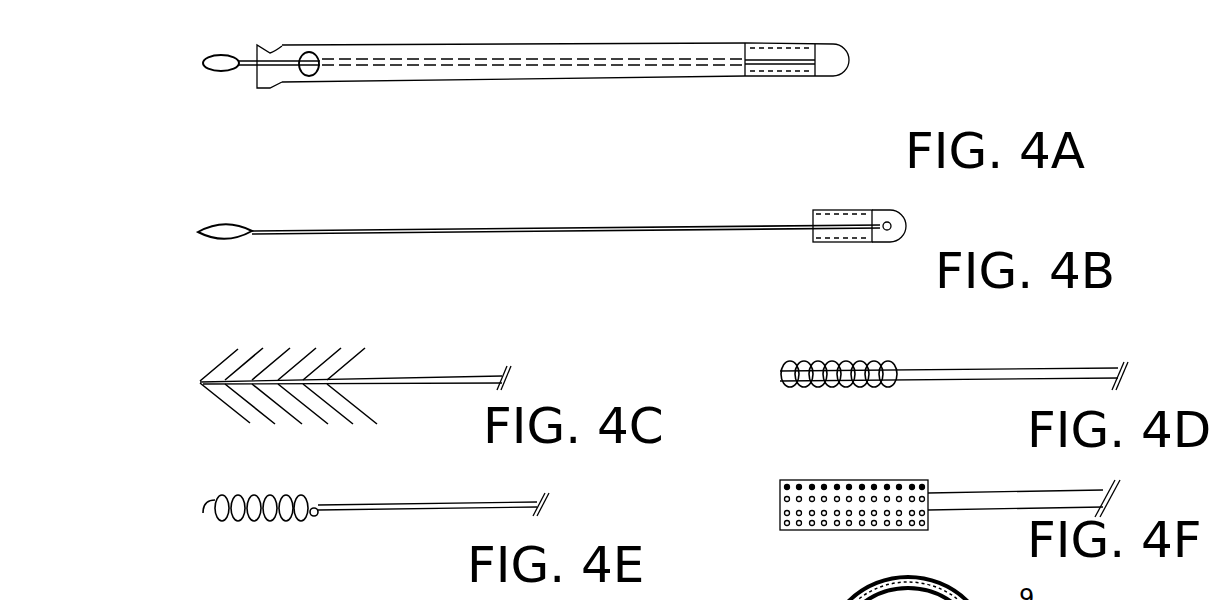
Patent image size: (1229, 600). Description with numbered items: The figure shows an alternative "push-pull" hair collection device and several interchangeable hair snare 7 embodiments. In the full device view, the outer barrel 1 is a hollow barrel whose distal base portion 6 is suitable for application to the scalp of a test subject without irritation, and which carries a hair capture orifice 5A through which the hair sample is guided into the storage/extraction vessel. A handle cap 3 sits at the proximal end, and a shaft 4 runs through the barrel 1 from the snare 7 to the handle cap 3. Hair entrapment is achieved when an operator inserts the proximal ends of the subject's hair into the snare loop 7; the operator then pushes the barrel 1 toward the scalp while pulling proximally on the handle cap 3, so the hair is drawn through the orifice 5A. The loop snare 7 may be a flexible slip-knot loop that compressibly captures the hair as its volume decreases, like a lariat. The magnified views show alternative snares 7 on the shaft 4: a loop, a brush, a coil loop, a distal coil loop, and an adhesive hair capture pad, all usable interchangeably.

In FIG. 4A, the outer barrel 1 is at (555, 78).
In FIG. 4A, the handle cap 3 is at (847, 75).
In FIG. 4B, the handle cap 3 is at (836, 242).
In FIG. 4A, the shaft 4 is at (248, 66).
In FIG. 4B, the shaft 4 is at (475, 230).
In FIG. 4C, the shaft 4 is at (403, 375).
In FIG. 4D, the shaft 4 is at (990, 370).
In FIG. 4E, the shaft 4 is at (405, 505).
In FIG. 4F, the shaft 4 is at (985, 493).
In FIG. 4A, the hair capture orifice 5A is at (311, 76).
In FIG. 4A, the distal base portion 6 is at (262, 88).
In FIG. 4A, the hair snare 7 is at (224, 72).
In FIG. 4B, the hair snare 7 is at (232, 241).
In FIG. 4C, the hair snare 7 is at (245, 358).
In FIG. 4D, the hair snare 7 is at (832, 358).
In FIG. 4E, the hair snare 7 is at (230, 492).
In FIG. 4F, the hair snare 7 is at (830, 480).